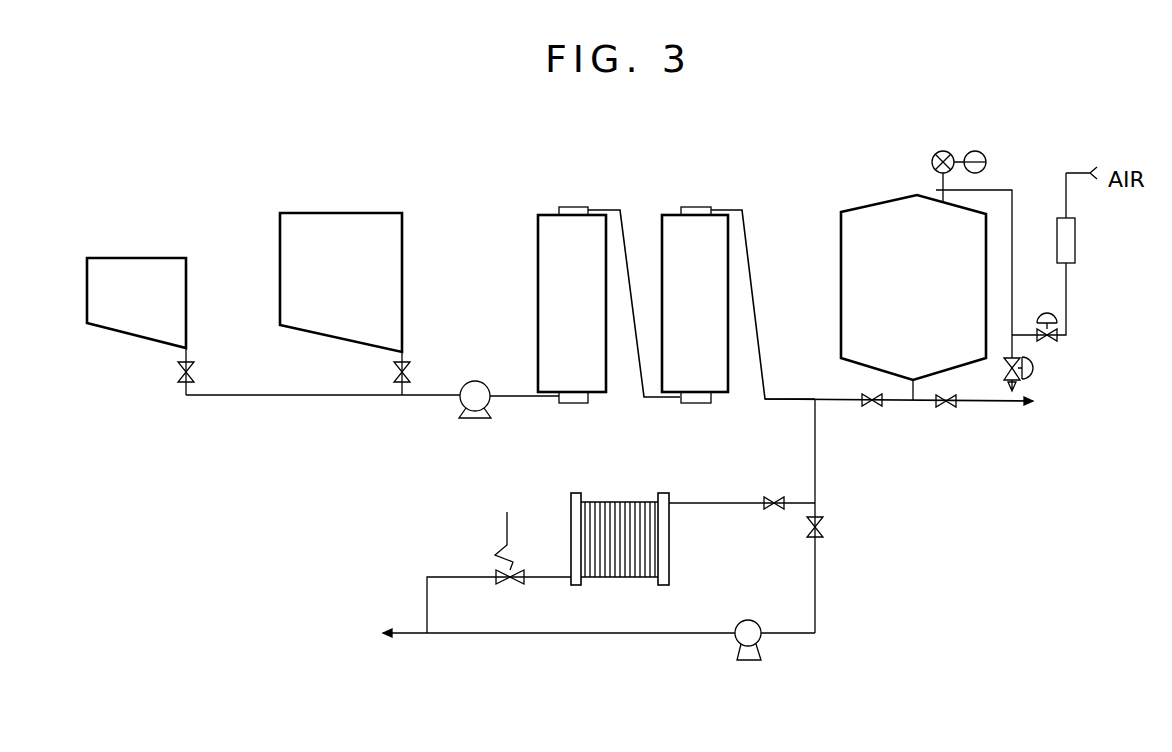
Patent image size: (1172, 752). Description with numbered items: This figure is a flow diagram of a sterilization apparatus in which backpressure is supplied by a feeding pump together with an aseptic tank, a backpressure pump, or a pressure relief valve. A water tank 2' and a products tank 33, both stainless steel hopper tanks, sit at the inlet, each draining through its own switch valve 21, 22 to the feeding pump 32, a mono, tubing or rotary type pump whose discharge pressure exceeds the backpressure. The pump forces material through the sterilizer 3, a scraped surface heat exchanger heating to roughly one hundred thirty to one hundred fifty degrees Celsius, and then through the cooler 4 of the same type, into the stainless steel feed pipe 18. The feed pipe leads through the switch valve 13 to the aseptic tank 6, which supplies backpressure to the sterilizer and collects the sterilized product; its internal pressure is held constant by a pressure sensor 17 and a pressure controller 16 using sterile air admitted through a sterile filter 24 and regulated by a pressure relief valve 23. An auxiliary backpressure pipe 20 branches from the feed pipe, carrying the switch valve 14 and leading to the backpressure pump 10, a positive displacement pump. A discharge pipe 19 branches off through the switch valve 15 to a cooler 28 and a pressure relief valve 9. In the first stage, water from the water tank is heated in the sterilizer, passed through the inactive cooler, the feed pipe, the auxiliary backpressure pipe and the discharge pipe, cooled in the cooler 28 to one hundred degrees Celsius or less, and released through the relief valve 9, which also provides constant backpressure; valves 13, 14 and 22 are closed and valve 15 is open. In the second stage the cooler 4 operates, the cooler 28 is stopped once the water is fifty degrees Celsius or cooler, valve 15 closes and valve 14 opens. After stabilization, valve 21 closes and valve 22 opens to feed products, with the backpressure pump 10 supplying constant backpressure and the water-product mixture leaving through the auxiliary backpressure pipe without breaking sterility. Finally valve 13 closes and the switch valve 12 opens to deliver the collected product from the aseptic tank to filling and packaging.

The water tank 2' is at (136, 270).
The products tank 33 is at (330, 213).
The switch valve 21 is at (181, 372).
The switch valve 22 is at (396, 372).
The feeding pump 32 is at (474, 414).
The sterilizer 3 is at (548, 213).
The cooler 4 is at (672, 213).
The feed pipe 18 is at (787, 396).
The aseptic tank 6 is at (841, 228).
The pressure sensor 17 is at (932, 162).
The pressure controller 16 is at (986, 162).
The sterile filter 24 is at (1075, 248).
The pressure relief valve 23 is at (1047, 342).
The switch valve 13 is at (867, 405).
The switch valve 12 is at (942, 406).
The auxiliary backpressure pipe 20 is at (815, 477).
The switch valve 14 is at (820, 523).
The switch valve 15 is at (773, 497).
The discharge pipe 19 is at (742, 502).
The cooler 28 is at (610, 500).
The pressure relief valve 9 is at (500, 569).
The backpressure pump 10 is at (758, 646).